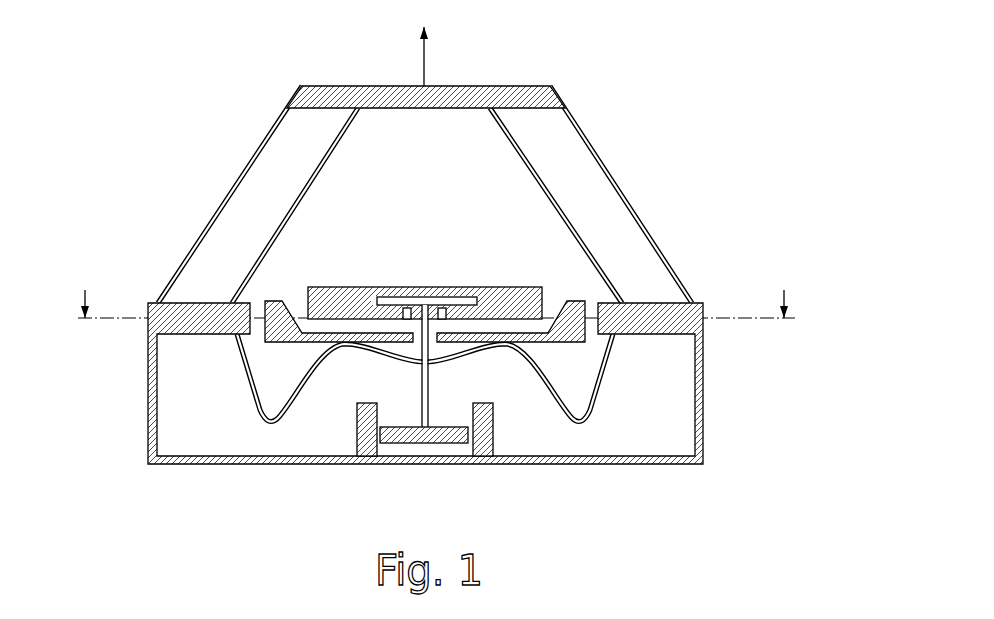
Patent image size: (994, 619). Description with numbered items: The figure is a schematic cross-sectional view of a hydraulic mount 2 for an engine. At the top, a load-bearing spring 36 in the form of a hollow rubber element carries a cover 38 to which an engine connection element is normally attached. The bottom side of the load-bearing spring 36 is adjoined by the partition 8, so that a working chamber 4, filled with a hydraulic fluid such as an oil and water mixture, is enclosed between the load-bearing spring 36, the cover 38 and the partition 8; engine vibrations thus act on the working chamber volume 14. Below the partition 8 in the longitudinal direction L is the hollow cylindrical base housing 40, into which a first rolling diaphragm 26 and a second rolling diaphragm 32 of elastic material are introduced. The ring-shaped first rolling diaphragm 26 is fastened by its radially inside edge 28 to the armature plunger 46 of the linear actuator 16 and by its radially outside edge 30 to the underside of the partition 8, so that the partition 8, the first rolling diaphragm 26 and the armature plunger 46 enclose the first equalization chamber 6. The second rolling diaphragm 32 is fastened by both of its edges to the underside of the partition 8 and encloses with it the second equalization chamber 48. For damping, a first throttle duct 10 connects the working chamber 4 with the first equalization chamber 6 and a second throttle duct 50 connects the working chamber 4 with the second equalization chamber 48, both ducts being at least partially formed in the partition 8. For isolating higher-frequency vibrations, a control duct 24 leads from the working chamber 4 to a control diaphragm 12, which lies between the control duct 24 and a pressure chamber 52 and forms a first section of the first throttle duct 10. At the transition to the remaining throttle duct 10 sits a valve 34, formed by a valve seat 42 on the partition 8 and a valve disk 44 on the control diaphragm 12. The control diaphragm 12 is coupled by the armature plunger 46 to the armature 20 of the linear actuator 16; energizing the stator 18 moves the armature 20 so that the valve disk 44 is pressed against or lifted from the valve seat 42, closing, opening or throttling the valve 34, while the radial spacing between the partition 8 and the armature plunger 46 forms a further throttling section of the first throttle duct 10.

The hydraulic mount 2 is at (697, 88).
The working chamber 4 is at (431, 157).
The first equalization chamber 6 is at (463, 365).
The partition 8 is at (706, 315).
The first throttle duct 10 is at (590, 310).
The control diaphragm 12 is at (400, 303).
The working chamber volume 14 is at (468, 236).
The linear actuator 16 is at (353, 437).
The stator 18 is at (357, 410).
The armature 20 is at (407, 433).
The control duct 24 is at (320, 328).
The first rolling diaphragm 26 is at (483, 360).
The radially inside edge 28 is at (432, 372).
The radially outside edge 30 is at (510, 353).
The second rolling diaphragm 32 is at (533, 352).
The valve 34 is at (403, 320).
The load-bearing spring 36 is at (610, 217).
The cover 38 is at (528, 85).
The base housing 40 is at (703, 395).
The valve seat 42 is at (549, 311).
The valve disk 44 is at (447, 323).
The armature plunger 46 is at (434, 420).
The second equalization chamber 48 is at (588, 405).
The second throttle duct 50 is at (601, 302).
The pressure chamber 52 is at (420, 300).